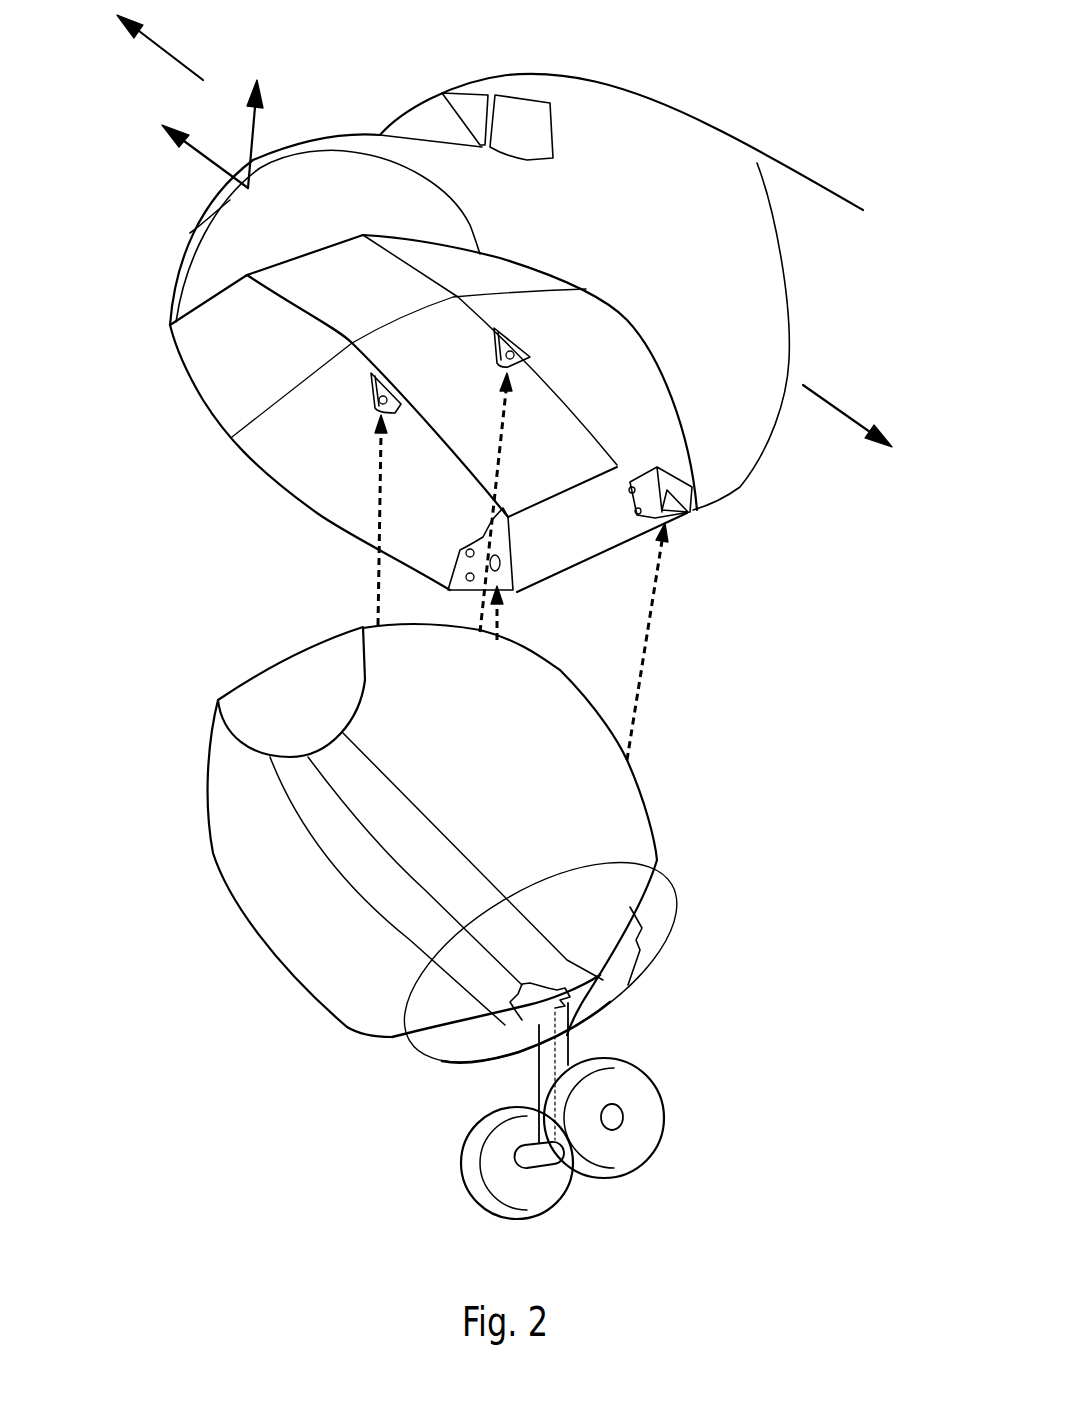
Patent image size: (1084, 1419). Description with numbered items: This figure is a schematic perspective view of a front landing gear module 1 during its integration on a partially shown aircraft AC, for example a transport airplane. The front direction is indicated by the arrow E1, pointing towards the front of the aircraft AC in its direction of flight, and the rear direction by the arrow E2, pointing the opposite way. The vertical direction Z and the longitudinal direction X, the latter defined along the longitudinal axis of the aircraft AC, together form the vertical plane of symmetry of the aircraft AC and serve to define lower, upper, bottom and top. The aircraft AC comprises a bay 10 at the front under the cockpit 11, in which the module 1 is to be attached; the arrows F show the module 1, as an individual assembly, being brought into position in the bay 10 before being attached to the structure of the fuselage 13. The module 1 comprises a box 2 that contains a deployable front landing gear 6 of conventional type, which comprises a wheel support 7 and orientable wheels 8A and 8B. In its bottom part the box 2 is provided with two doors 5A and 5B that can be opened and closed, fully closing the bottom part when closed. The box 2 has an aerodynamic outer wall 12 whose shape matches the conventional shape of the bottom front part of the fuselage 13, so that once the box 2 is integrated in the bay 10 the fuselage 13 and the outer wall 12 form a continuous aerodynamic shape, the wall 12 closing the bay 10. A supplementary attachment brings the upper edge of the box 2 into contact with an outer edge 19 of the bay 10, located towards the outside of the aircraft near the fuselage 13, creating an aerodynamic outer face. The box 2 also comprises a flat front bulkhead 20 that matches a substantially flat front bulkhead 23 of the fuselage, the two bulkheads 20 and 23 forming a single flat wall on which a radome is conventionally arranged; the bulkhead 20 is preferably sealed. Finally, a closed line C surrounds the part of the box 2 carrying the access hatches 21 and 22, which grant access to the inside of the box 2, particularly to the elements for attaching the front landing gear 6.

The aircraft AC is at (727, 135).
The arrow indicating the front direction E1 is at (163, 50).
The arrow indicating the rear direction E2 is at (830, 400).
The longitudinal direction X is at (190, 157).
The vertical direction Z is at (253, 133).
The cockpit 11 is at (425, 104).
The front bulkhead of the fuselage 23 is at (207, 273).
The bay 10 is at (214, 349).
The outer edge of the bay 19 is at (207, 405).
The fuselage 13 is at (738, 442).
The arrows indicating the mounting movement F is at (376, 556).
The front bulkhead 20 is at (272, 690).
The box 2 is at (630, 773).
The aerodynamic outer wall 12 is at (231, 821).
The closed line C is at (677, 888).
The access hatch 21 is at (465, 1038).
The door 5A is at (448, 1030).
The door 5B is at (587, 980).
The access hatch 22 is at (623, 943).
The front landing gear module 1 is at (297, 1039).
The front landing gear 6 is at (431, 1120).
The wheel support 7 is at (583, 1044).
The wheel 8A is at (633, 1163).
The wheel 8B is at (480, 1200).